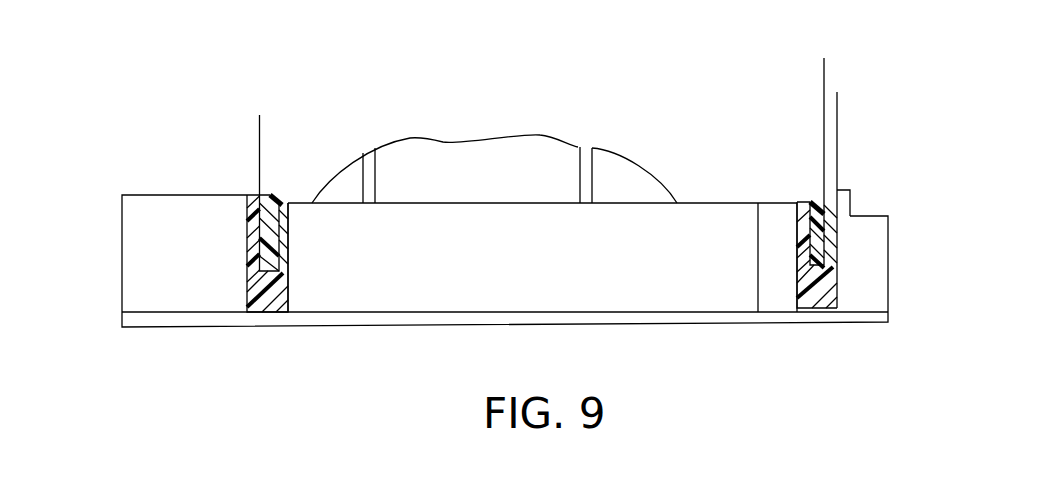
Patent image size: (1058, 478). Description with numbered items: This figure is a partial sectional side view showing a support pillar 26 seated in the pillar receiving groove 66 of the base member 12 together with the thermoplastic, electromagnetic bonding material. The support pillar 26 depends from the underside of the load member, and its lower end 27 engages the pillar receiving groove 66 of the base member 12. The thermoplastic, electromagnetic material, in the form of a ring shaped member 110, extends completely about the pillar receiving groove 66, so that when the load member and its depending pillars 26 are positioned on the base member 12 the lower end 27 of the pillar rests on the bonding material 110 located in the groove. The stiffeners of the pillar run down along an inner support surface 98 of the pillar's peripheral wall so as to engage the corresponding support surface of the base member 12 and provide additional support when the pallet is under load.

The base member 12 is at (153, 258).
The support pillar 26 is at (702, 121).
The lower end of support pillar 27 is at (817, 233).
The pillar receiving groove 66 is at (257, 193).
The inner support surface 98 is at (370, 167).
The ring shaped member 110 is at (268, 296).